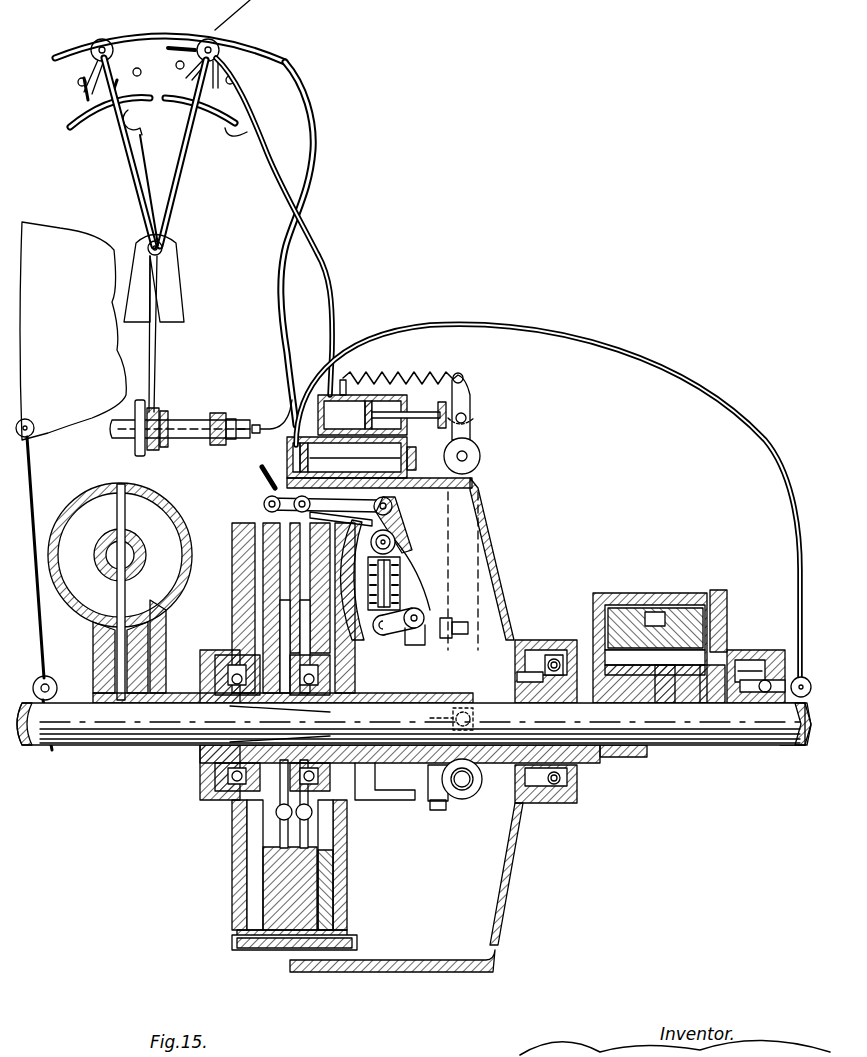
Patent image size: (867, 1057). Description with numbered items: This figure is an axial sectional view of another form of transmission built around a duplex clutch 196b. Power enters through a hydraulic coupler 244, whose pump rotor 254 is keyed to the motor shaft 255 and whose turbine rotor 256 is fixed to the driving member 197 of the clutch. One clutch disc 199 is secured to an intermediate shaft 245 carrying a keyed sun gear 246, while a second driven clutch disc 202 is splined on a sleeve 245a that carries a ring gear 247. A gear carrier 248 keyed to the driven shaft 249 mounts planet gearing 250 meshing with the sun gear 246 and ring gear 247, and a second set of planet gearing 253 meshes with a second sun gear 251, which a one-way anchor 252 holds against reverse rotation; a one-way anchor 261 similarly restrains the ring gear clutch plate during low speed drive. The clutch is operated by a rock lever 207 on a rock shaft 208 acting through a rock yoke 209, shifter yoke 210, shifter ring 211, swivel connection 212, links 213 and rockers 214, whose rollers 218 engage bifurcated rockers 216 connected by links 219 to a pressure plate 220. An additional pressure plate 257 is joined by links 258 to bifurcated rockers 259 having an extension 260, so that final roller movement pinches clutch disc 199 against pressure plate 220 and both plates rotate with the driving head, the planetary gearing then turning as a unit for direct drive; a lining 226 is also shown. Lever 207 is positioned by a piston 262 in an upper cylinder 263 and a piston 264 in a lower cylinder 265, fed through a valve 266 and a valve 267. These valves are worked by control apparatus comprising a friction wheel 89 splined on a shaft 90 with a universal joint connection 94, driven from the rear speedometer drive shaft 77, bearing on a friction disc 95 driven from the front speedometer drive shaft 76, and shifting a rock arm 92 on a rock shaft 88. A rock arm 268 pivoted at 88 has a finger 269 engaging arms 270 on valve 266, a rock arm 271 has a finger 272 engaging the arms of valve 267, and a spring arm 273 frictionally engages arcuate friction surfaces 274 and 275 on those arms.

The front speedometer drive shaft 76 is at (40, 650).
The rear speedometer drive shaft 77 is at (622, 360).
The rock shaft 88 is at (162, 245).
The friction wheel 89 is at (150, 405).
The shaft 90 is at (188, 428).
The rock arm 92 is at (155, 285).
The universal joint connection 94 is at (221, 410).
The friction disc 95 is at (64, 250).
The duplex clutch 196b is at (228, 925).
The driving member 197 is at (278, 952).
The clutch disc 199 is at (330, 885).
The driven clutch disc 202 is at (330, 864).
The rock lever 207 is at (480, 440).
The rock shaft 208 is at (465, 790).
The rock yoke 209 is at (412, 748).
The shifter yoke 210 is at (432, 650).
The shifter ring 211 is at (464, 571).
The swivel connection 212 is at (495, 615).
The links 213 is at (395, 612).
The rockers 214 is at (400, 570).
The bifurcated rockers 216 is at (400, 528).
The rollers 218 is at (396, 545).
The links 219 is at (392, 504).
The pressure plate 220 is at (262, 515).
The friction lining 226 is at (330, 910).
The hydraulic coupler 244 is at (96, 488).
The intermediate shaft 245 is at (575, 745).
The sleeve 245a is at (508, 650).
The sun gear 246 is at (655, 695).
The ring gear 247 is at (660, 610).
The gear carrier 248 is at (710, 690).
The driven shaft 249 is at (795, 748).
The planet gearing 250 is at (622, 610).
The second sun gear 251 is at (730, 650).
The one-way anchor 252 is at (738, 668).
The second set of planet gearing 253 is at (720, 600).
The pump rotor 254 is at (100, 521).
The motor shaft 255 is at (100, 740).
The turbine rotor 256 is at (140, 585).
The pressure plate 257 is at (265, 876).
The links 258 is at (262, 474).
The bifurcated rockers 259 is at (392, 582).
The extension 260 is at (385, 589).
The one-way anchor 261 is at (536, 655).
The piston 262 is at (410, 392).
The upper cylinder 263 is at (348, 415).
The piston 264 is at (287, 452).
The lower cylinder 265 is at (262, 413).
The valve 266 is at (218, 46).
The valve 267 is at (97, 42).
The rock arm 268 is at (183, 172).
The finger 269 is at (185, 123).
The arms 270 is at (290, 55).
The rock arm 271 is at (122, 160).
The finger 272 is at (105, 98).
The spring arm 273 is at (150, 183).
The arcuate friction surface 274 is at (232, 128).
The arcuate friction surface 275 is at (86, 130).